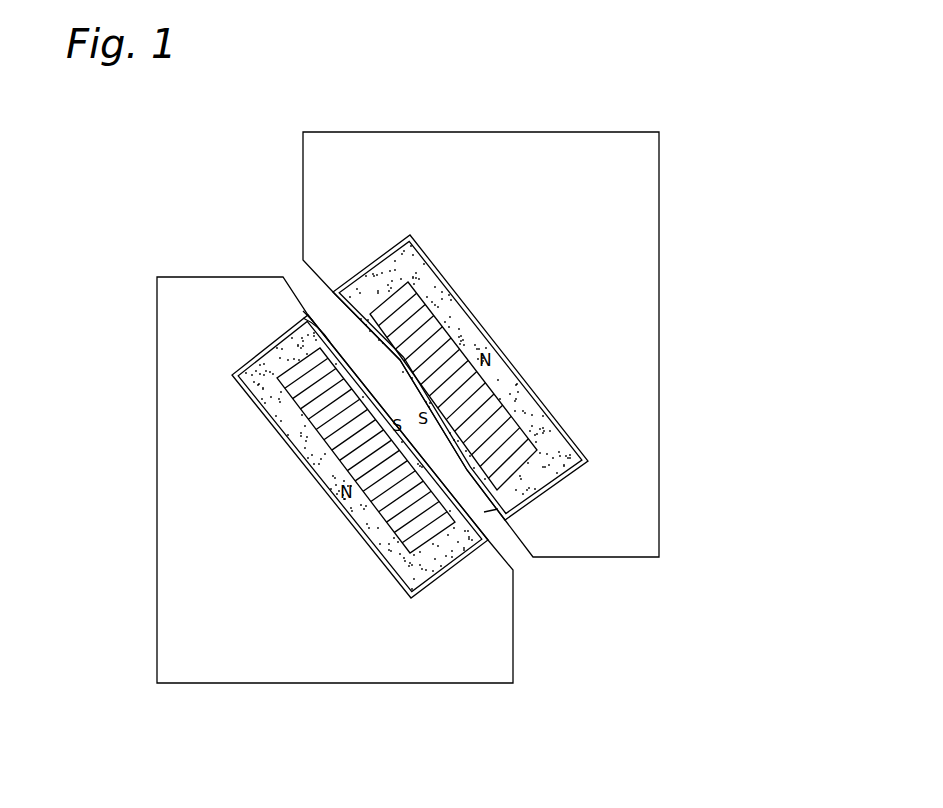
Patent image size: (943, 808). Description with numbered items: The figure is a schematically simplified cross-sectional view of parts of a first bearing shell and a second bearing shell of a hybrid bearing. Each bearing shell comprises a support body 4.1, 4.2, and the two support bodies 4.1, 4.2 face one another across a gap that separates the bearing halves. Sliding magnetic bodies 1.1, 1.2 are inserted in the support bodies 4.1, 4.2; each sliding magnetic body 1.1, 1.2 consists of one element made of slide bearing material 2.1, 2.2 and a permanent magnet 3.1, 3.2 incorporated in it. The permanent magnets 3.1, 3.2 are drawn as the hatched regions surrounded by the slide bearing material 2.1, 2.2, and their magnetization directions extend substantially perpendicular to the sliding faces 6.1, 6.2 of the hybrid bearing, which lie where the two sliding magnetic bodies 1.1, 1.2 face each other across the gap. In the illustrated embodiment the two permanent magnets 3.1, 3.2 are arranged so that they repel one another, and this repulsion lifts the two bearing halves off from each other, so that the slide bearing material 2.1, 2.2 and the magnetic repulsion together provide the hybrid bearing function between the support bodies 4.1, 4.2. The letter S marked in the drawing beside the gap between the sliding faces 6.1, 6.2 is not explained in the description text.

The sliding magnetic body 1.1 is at (462, 560).
The sliding magnetic body 1.2 is at (579, 384).
The element made of slide bearing material 2.1 is at (360, 544).
The element made of slide bearing material 2.2 is at (532, 393).
The permanent magnet 3.1 is at (271, 551).
The permanent magnet 3.2 is at (482, 327).
The support body 4.1 is at (245, 503).
The support body 4.2 is at (597, 205).
The sliding face 6.1 is at (303, 318).
The sliding face 6.2 is at (490, 510).
The gap S is at (308, 313).